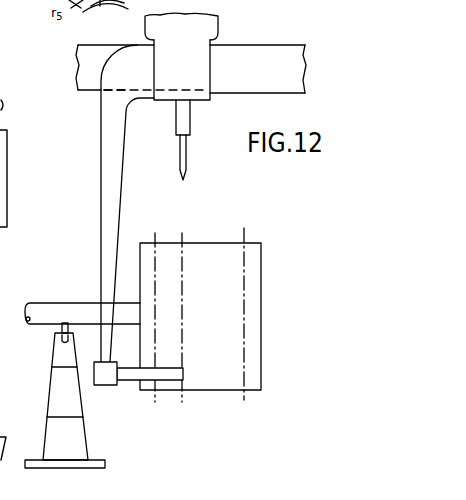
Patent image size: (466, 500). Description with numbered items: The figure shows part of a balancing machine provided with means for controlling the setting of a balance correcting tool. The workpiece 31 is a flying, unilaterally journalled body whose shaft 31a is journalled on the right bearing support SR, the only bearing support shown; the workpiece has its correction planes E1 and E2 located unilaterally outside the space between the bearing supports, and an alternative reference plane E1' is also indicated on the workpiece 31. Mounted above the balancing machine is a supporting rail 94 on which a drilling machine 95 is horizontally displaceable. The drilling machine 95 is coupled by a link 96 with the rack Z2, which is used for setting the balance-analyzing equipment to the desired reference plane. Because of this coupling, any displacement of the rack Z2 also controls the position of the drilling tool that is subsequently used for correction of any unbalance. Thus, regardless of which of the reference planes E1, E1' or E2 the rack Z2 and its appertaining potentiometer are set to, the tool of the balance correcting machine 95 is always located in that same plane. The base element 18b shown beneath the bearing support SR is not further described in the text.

The drilling machine 95 is at (203, 71).
The link 96 is at (105, 155).
The supporting rail 94 is at (93, 87).
The workpiece 31 is at (217, 244).
The correction plane E1 is at (144, 298).
The reference plane E1' is at (182, 298).
The correction plane E2 is at (244, 232).
The shaft of the workpiece 31a is at (75, 303).
The rack Z2 is at (130, 383).
The right bearing support SR is at (59, 355).
The base plate 18b is at (58, 381).